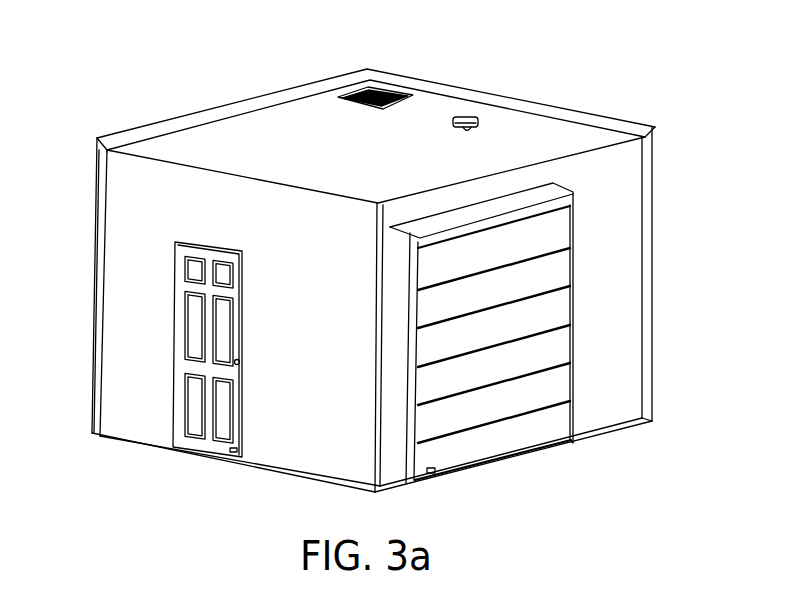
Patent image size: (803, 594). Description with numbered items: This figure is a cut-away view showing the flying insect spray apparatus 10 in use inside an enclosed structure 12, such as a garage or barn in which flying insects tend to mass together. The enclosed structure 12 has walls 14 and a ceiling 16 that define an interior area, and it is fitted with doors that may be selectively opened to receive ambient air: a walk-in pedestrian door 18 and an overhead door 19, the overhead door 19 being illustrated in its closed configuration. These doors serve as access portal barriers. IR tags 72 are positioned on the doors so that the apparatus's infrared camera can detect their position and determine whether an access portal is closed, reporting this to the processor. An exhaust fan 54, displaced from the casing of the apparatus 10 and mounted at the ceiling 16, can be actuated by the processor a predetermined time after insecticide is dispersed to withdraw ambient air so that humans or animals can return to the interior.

The enclosed structure 12 is at (262, 56).
The ceiling 16 is at (376, 136).
The walls 14 is at (115, 295).
The exhaust fan 54 is at (396, 74).
The flying insect spray apparatus 10 is at (491, 111).
The walk-in pedestrian door 18 is at (192, 430).
The overhead door 19 is at (563, 310).
The IR tag 72 is at (230, 453).